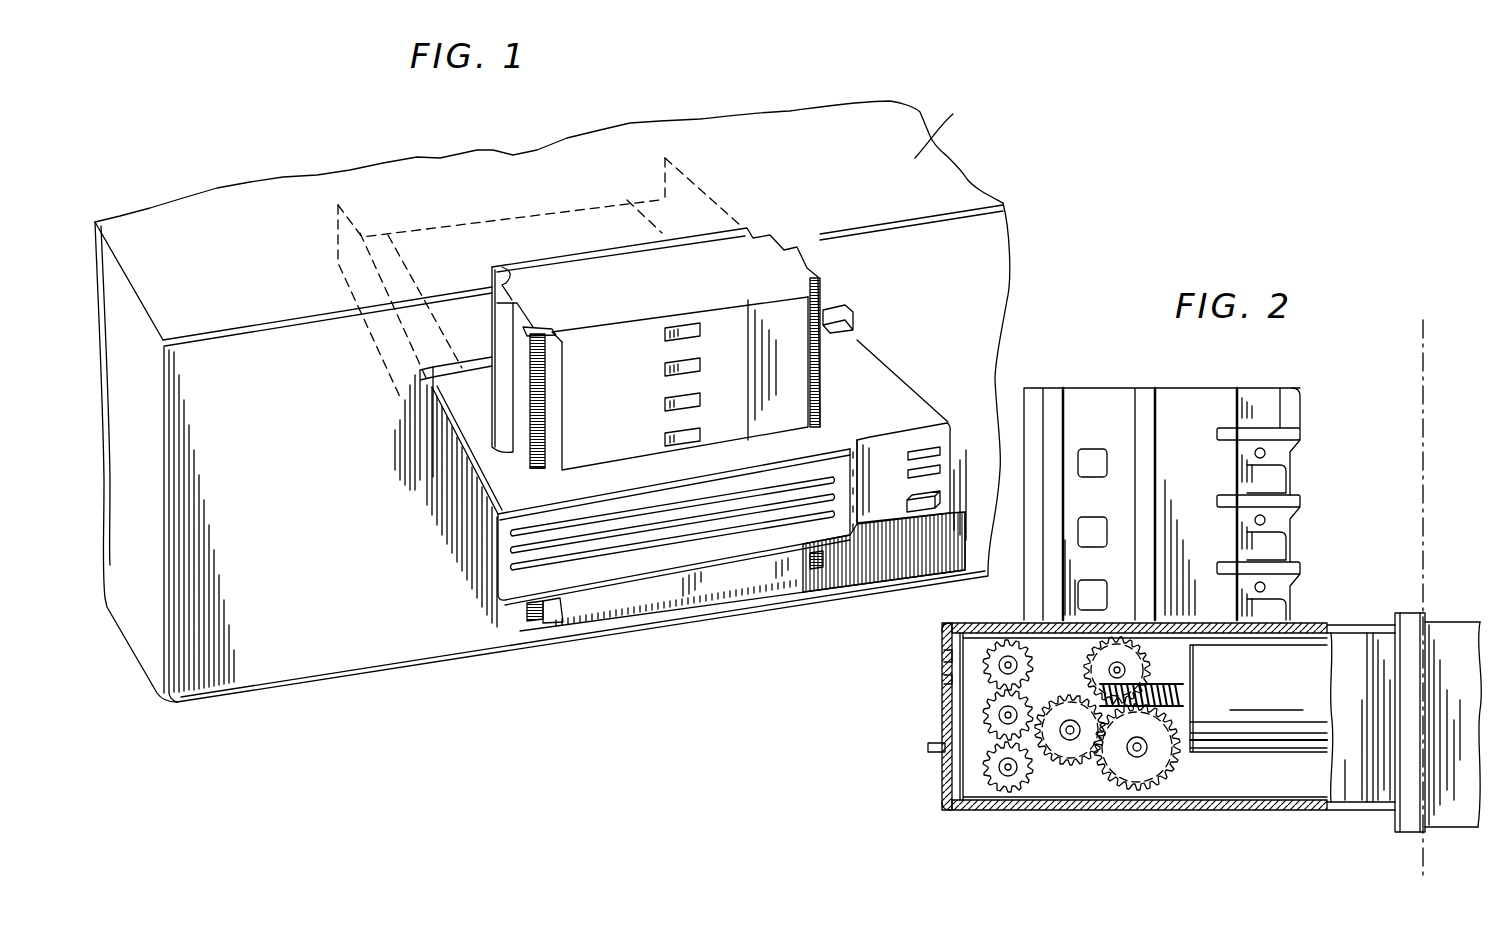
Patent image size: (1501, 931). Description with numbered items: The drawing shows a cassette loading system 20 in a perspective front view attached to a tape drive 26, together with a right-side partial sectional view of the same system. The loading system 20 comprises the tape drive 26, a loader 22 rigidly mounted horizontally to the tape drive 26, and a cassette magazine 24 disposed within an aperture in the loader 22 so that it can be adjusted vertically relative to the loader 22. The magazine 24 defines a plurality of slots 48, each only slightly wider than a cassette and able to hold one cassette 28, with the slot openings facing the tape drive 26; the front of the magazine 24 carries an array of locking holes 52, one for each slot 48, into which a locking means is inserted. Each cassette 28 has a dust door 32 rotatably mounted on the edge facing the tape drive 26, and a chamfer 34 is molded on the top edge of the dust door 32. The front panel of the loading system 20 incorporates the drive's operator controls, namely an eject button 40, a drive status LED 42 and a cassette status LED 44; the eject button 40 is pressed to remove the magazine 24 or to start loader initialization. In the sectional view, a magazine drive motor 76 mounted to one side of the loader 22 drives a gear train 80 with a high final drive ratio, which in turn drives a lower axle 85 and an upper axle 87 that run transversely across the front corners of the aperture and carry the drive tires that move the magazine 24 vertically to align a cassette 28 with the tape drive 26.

In FIG. 1, the cassette loading system 20 is at (418, 521).
In FIG. 1, the loader 22 is at (672, 483).
In FIG. 1, the cassette magazine 24 is at (656, 341).
In FIG. 2, the cassette magazine 24 is at (1252, 479).
In FIG. 1, the tape drive 26 is at (552, 400).
In FIG. 2, the tape drive 26 is at (1453, 620).
In FIG. 2, the cassette 28 is at (1305, 525).
In FIG. 2, the dust door 32 is at (1288, 452).
In FIG. 1, the chamfer 34 is at (893, 520).
In FIG. 1, the eject button 40 is at (930, 512).
In FIG. 2, the eject button 40 is at (935, 748).
In FIG. 1, the drive status LED 42 is at (920, 450).
In FIG. 2, the drive status LED 42 is at (948, 655).
In FIG. 1, the cassette status LED 44 is at (938, 468).
In FIG. 2, the cassette status LED 44 is at (948, 680).
In FIG. 2, the slot 48 is at (1348, 509).
In FIG. 1, the locking hole 52 is at (660, 440).
In FIG. 2, the magazine drive motor 76 is at (1260, 695).
In FIG. 2, the gear train 80 is at (1079, 717).
In FIG. 2, the axle 85 is at (1010, 792).
In FIG. 2, the axle 87 is at (1008, 665).